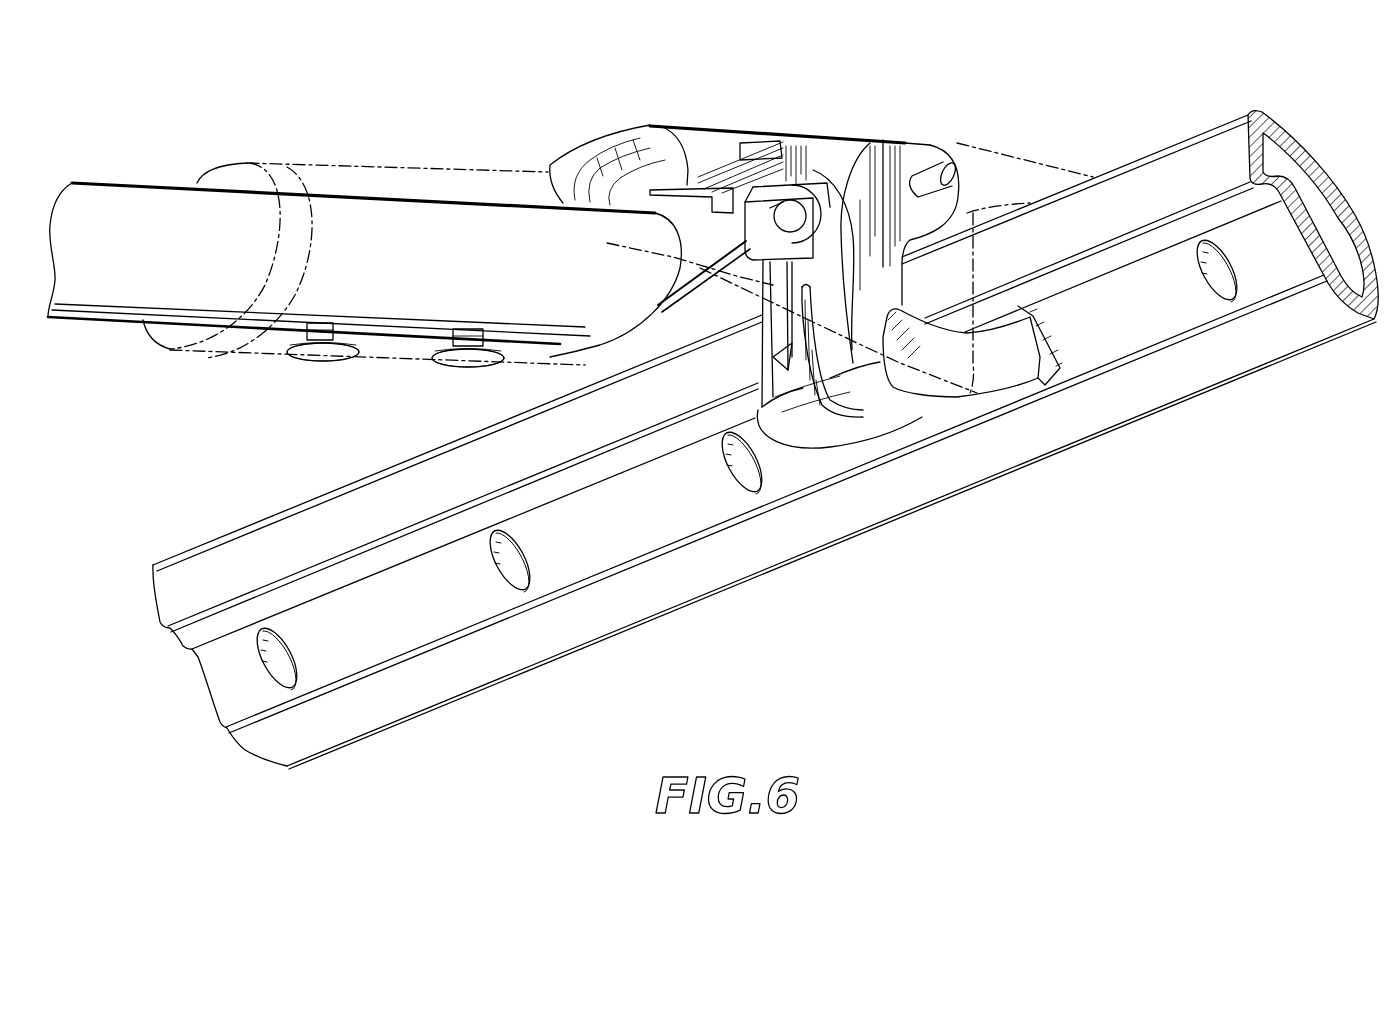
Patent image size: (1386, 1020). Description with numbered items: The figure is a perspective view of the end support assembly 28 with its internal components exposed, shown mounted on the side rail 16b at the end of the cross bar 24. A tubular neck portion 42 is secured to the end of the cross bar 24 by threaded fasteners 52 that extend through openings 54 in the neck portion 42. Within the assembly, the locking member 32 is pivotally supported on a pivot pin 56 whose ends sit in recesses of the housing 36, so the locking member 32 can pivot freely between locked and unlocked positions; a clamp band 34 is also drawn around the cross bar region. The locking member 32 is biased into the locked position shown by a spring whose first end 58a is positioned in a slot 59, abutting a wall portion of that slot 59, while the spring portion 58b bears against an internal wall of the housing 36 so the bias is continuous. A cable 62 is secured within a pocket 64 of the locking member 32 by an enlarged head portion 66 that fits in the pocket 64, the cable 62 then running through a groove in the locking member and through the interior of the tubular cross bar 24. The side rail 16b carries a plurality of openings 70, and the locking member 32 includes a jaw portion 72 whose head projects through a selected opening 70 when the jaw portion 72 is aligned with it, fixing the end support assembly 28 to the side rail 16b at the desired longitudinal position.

The side rail 16b is at (1192, 145).
The cross bar 24 is at (138, 188).
The end support assembly 28 is at (361, 104).
The locking member 32 is at (807, 143).
The clamp band 34 is at (655, 126).
The housing 36 is at (1005, 175).
The tubular neck portion 42 is at (312, 165).
The threaded fasteners 52 is at (323, 358).
The openings 54 is at (287, 356).
The pivot pin 56 is at (950, 173).
The first end of spring 58a is at (762, 373).
The portion of spring 58b is at (690, 187).
The slot 59 is at (760, 322).
The cable 62 is at (702, 277).
The pocket 64 is at (866, 158).
The enlarged head portion 66 is at (797, 210).
The openings 70 is at (745, 470).
The jaw portion 72 is at (1007, 370).